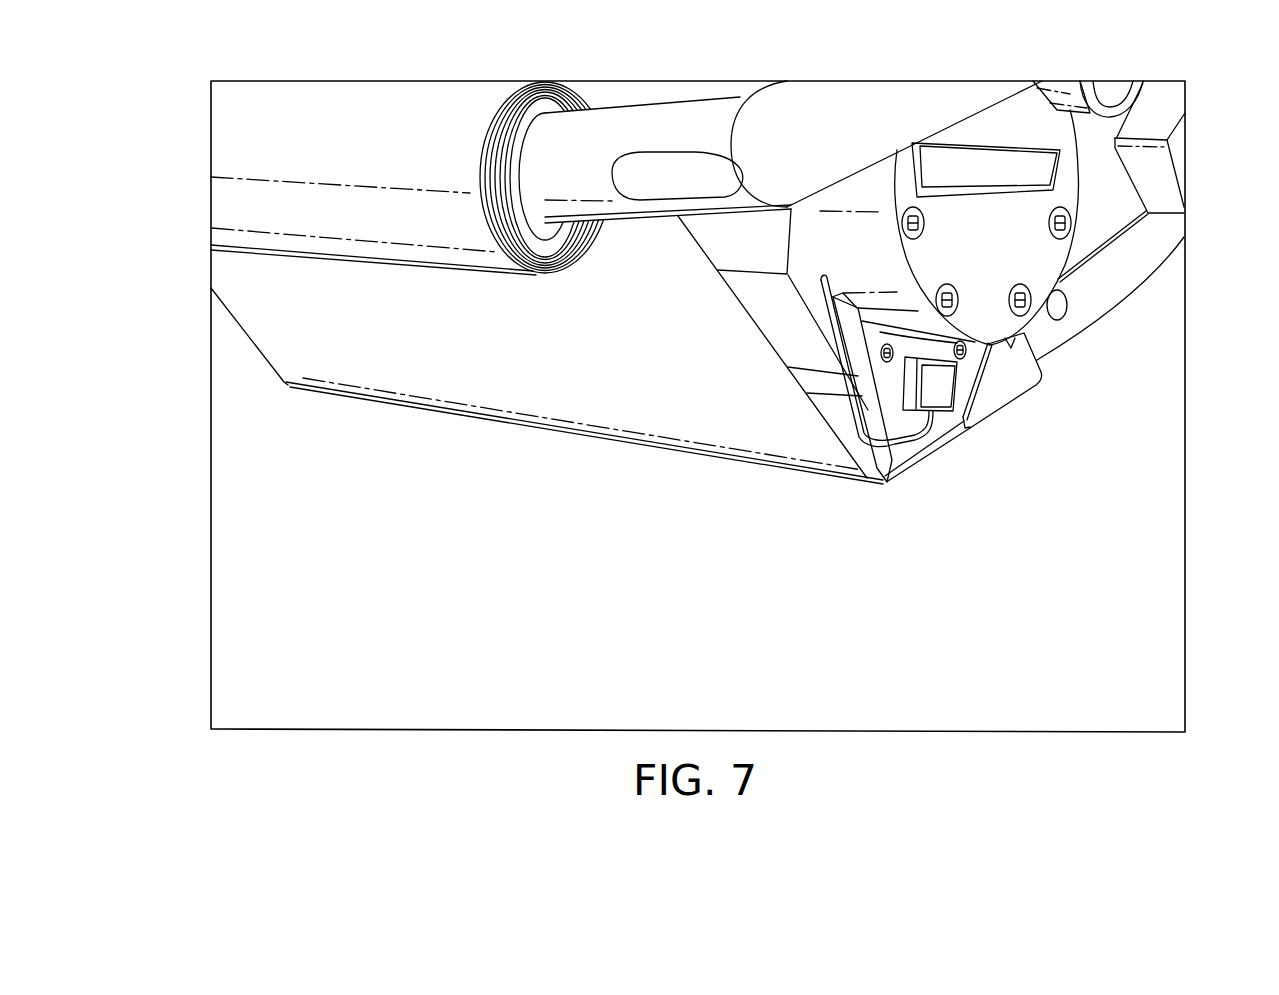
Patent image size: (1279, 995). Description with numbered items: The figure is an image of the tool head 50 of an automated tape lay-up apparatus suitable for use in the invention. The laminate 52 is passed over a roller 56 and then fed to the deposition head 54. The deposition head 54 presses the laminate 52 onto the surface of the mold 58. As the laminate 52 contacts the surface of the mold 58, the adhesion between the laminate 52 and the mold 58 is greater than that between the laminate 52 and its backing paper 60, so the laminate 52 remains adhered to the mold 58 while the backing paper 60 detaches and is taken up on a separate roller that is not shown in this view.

The tool head 50 is at (1207, 115).
The laminate 52 is at (257, 328).
The deposition head 54 is at (886, 481).
The roller 56 is at (428, 93).
The mold 58 is at (426, 543).
The backing paper 60 is at (932, 448).